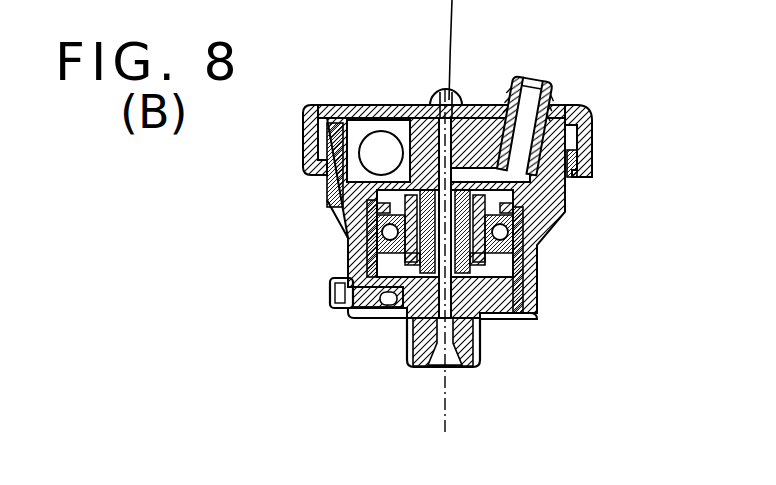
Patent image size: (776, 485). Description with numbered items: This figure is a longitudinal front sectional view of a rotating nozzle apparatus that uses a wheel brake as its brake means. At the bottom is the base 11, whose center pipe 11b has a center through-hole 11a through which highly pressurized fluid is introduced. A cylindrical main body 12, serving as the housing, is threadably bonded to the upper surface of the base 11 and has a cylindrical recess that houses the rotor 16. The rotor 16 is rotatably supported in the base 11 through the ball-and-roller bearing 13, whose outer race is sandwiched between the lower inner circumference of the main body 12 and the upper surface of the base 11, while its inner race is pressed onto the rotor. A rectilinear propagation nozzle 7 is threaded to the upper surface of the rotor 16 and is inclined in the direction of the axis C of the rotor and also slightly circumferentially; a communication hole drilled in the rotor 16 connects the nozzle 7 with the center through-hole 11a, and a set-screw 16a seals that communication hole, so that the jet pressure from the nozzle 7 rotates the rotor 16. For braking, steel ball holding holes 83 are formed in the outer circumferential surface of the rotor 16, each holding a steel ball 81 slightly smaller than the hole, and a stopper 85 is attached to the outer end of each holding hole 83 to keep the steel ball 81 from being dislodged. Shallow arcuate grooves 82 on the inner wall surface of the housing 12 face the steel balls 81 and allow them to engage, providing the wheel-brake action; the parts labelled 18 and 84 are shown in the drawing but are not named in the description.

The rectilinear propagation nozzle 7 is at (546, 88).
The base 11 is at (480, 333).
The center through-hole 11a is at (410, 362).
The center pipe 11b is at (392, 318).
The main body 12 is at (565, 216).
The ball-and-roller bearing 13 is at (540, 247).
The rotor 16 is at (480, 107).
The set-screw 16a is at (567, 176).
The right cap 18 is at (585, 132).
The steel ball 81 is at (381, 150).
The shallow arcuate groove 82 is at (303, 130).
The steel ball holding hole 83 is at (353, 105).
The housing flange 84 is at (330, 218).
The stopper 85 is at (328, 183).
The axis C is at (445, 278).